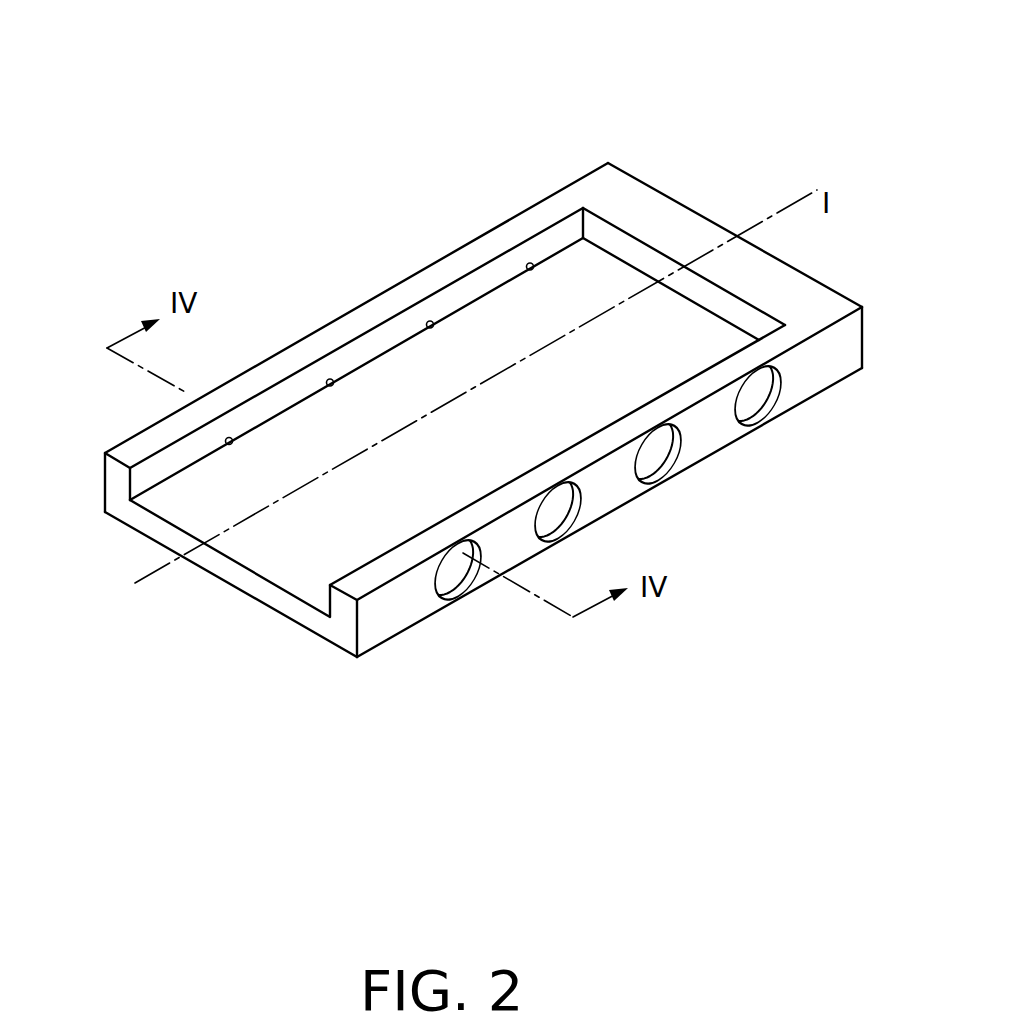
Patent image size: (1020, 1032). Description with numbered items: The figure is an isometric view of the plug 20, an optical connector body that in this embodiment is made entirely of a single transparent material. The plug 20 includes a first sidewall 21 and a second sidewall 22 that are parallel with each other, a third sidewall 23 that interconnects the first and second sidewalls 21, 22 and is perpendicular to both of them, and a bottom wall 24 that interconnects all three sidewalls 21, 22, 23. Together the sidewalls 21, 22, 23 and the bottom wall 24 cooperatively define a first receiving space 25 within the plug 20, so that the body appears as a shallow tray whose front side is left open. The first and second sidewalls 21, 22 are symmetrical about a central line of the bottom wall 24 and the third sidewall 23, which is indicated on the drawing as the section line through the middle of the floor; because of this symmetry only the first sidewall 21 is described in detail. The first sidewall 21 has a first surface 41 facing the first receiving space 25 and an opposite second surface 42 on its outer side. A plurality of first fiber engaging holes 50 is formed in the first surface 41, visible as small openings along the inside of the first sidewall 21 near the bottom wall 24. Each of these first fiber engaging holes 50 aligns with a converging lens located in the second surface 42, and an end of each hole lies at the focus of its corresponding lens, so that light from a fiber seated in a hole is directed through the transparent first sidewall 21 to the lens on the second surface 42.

The plug 20 is at (380, 95).
The first sidewall 21 is at (408, 290).
The second sidewall 22 is at (700, 392).
The third sidewall 23 is at (640, 202).
The bottom wall 24 is at (308, 612).
The first receiving space 25 is at (693, 330).
The first surface 41 is at (167, 462).
The second surface 42 is at (313, 322).
The first fiber engaging holes 50 is at (229, 445).